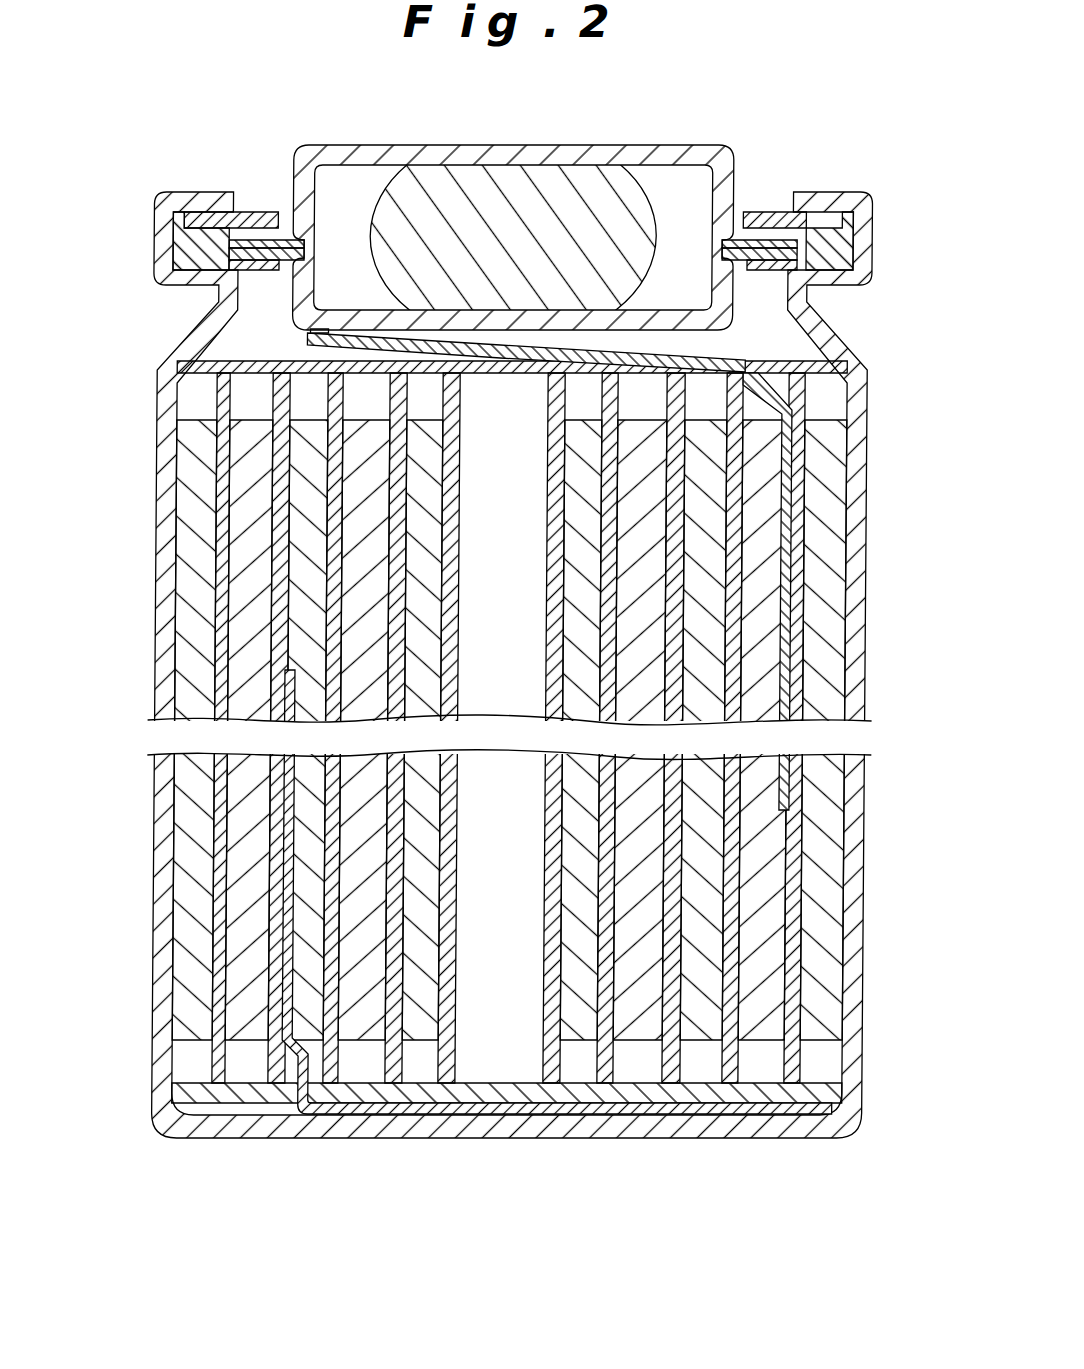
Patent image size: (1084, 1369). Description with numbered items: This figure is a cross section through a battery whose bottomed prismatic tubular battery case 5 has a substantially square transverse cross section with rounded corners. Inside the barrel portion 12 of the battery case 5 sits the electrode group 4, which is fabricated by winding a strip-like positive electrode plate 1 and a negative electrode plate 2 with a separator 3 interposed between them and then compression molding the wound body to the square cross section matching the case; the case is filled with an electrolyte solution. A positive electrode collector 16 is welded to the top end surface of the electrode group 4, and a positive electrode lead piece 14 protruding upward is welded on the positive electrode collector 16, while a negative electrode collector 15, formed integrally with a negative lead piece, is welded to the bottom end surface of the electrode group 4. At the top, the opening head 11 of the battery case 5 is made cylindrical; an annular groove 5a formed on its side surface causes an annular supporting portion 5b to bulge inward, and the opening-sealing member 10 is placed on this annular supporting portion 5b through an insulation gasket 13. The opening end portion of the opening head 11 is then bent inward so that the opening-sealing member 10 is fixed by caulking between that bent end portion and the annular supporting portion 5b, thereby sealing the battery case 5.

The positive electrode plate 1 is at (764, 865).
The negative electrode plate 2 is at (916, 848).
The separator 3 is at (797, 975).
The electrode group 4 is at (567, 728).
The battery case 5 is at (526, 665).
The annular groove 5a is at (216, 303).
The annular supporting portion 5b is at (790, 311).
The opening-sealing member 10 is at (725, 151).
The opening head 11 is at (837, 287).
The barrel portion 12 is at (868, 612).
The insulation gasket 13 is at (191, 245).
The positive electrode lead piece 14 is at (327, 337).
The negative electrode collector 15 is at (489, 1100).
The positive electrode collector 16 is at (205, 374).